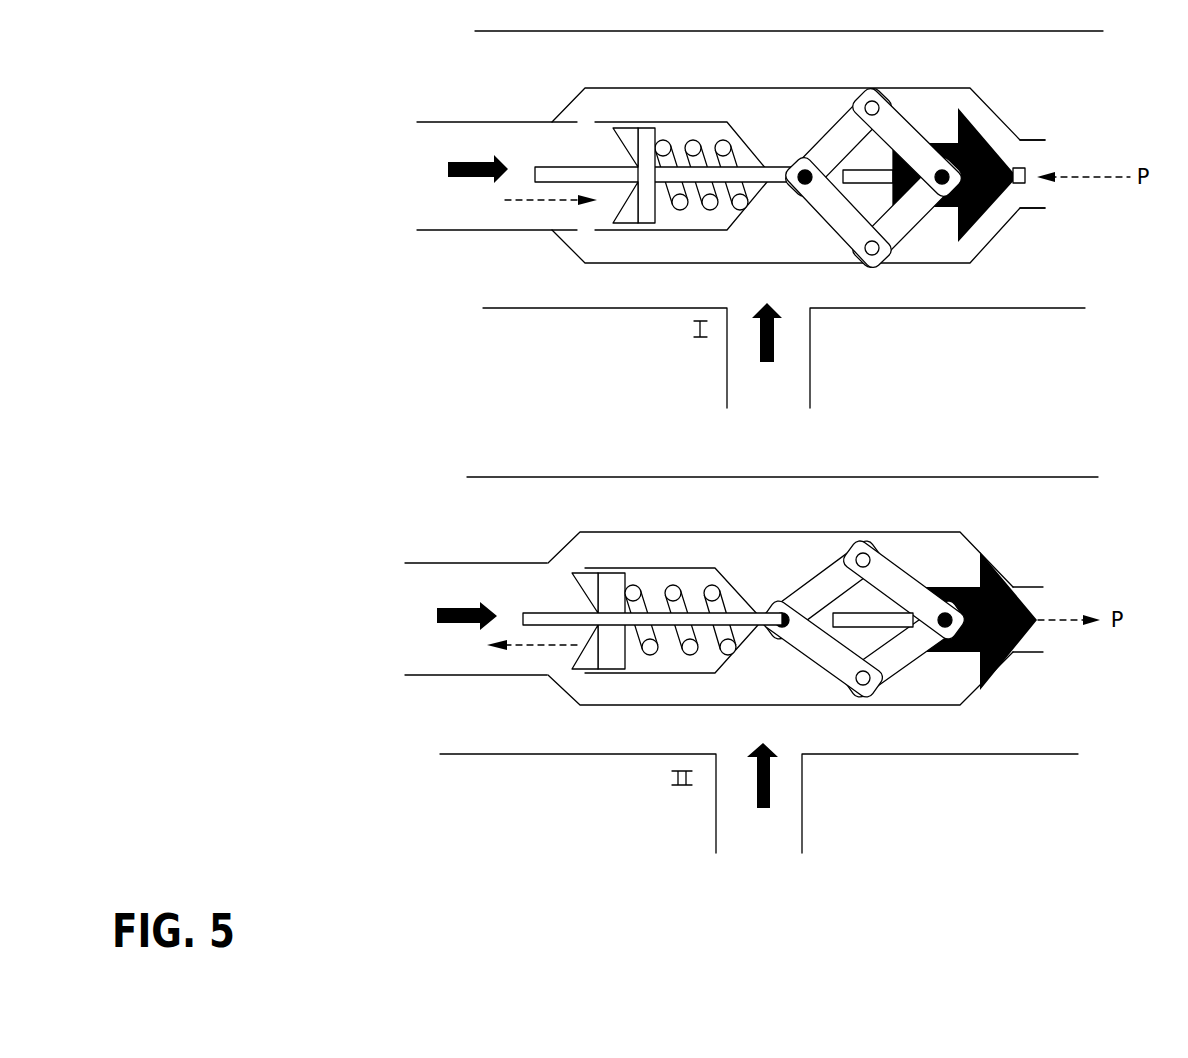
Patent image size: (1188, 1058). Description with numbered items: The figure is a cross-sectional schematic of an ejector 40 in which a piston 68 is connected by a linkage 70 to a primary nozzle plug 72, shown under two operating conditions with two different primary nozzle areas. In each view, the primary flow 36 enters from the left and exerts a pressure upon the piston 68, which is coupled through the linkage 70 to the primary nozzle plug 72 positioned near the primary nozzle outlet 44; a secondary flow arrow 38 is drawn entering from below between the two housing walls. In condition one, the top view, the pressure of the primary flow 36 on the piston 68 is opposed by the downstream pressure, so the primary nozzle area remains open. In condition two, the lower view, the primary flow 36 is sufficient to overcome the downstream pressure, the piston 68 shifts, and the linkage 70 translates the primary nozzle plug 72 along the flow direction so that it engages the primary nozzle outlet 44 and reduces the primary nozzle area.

The primary flow 36 is at (455, 392).
The flow direction 38 is at (764, 571).
The ejector 40 is at (1023, 317).
The primary nozzle outlet 44 is at (1045, 208).
The piston 68 is at (648, 128).
The linkage 70 is at (892, 563).
The primary nozzle plug 72 is at (985, 142).